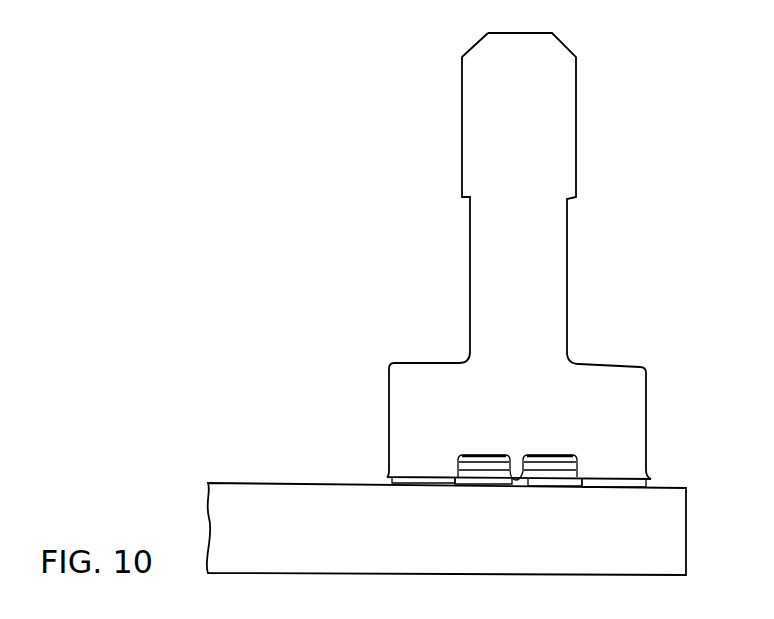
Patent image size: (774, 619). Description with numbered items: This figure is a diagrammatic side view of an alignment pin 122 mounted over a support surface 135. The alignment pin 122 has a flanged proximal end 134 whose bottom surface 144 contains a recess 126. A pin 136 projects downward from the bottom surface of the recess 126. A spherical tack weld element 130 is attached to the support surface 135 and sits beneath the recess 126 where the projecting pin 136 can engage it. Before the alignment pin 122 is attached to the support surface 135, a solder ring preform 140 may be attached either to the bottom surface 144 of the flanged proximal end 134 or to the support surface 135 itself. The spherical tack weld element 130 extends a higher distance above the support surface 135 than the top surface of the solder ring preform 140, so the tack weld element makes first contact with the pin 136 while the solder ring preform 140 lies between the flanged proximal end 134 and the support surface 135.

The alignment pin 122 is at (569, 256).
The flanged proximal end 134 is at (648, 414).
The pin 136 is at (512, 463).
The recess 126 is at (482, 480).
The spherical tack weld element 130 is at (511, 486).
The bottom surface 144 is at (410, 483).
The solder ring preform 140 is at (613, 489).
The support surface 135 is at (283, 483).